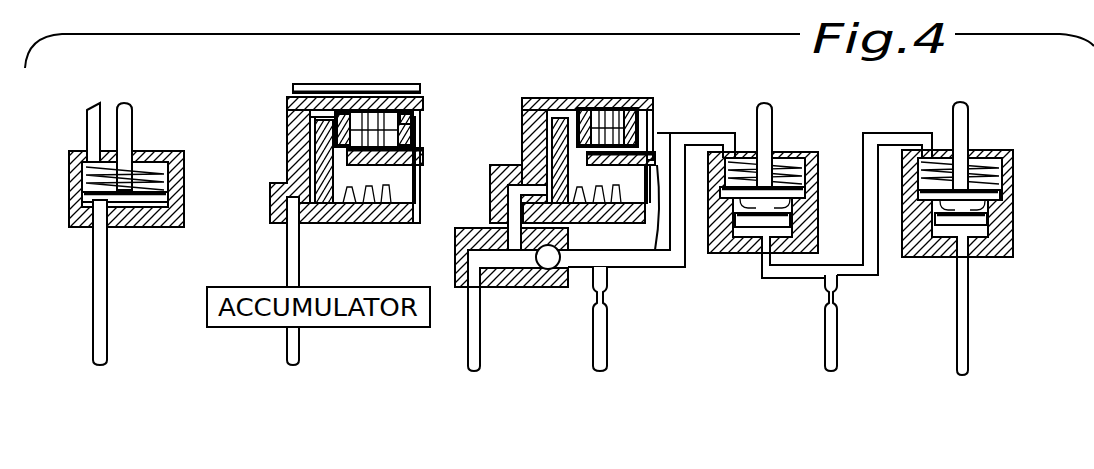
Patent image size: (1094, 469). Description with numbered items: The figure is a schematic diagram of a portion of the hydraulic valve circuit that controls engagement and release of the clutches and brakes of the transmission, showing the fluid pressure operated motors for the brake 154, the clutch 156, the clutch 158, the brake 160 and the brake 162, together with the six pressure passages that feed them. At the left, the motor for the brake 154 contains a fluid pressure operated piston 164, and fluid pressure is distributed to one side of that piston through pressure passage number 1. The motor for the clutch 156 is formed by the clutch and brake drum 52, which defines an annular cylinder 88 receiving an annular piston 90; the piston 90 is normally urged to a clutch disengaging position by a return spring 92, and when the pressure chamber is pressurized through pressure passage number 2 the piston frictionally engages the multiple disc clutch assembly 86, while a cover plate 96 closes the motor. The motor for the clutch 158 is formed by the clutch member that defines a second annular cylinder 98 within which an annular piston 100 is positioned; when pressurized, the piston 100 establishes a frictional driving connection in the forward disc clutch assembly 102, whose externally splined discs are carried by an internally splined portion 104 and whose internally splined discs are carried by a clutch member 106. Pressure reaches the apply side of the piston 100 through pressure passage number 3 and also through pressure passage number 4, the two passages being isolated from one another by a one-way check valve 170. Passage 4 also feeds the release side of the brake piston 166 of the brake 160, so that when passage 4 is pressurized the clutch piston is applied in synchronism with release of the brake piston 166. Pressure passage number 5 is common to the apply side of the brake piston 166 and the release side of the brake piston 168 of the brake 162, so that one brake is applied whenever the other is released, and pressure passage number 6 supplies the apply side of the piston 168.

The brake 154 is at (165, 148).
The fluid pressure operated piston 164 is at (153, 220).
The clutch and brake drum 52 is at (292, 105).
The cover plate 96 is at (317, 84).
The multiple disc clutch assembly 86 is at (345, 110).
The annular cylinder 88 is at (315, 132).
The annular piston 90 is at (327, 153).
The return spring 92 is at (347, 224).
The clutch 156 is at (422, 143).
The second annular cylinder 98 is at (553, 168).
The annular piston 100 is at (553, 168).
The internally splined portion 104 is at (573, 99).
The forward disc clutch assembly 102 is at (610, 104).
The clutch 158 is at (648, 127).
The clutch member 106 is at (657, 167).
The one-way check valve 170 is at (541, 281).
The brake 160 is at (788, 151).
The brake piston 166 is at (726, 253).
The brake 162 is at (979, 145).
The brake piston 168 is at (999, 198).
The pressure passage number 1 is at (99, 301).
The pressure passage number 2 is at (291, 302).
The pressure passage number 3 is at (473, 344).
The pressure passage number 4 is at (600, 334).
The pressure passage number 5 is at (831, 338).
The pressure passage number 6 is at (961, 330).